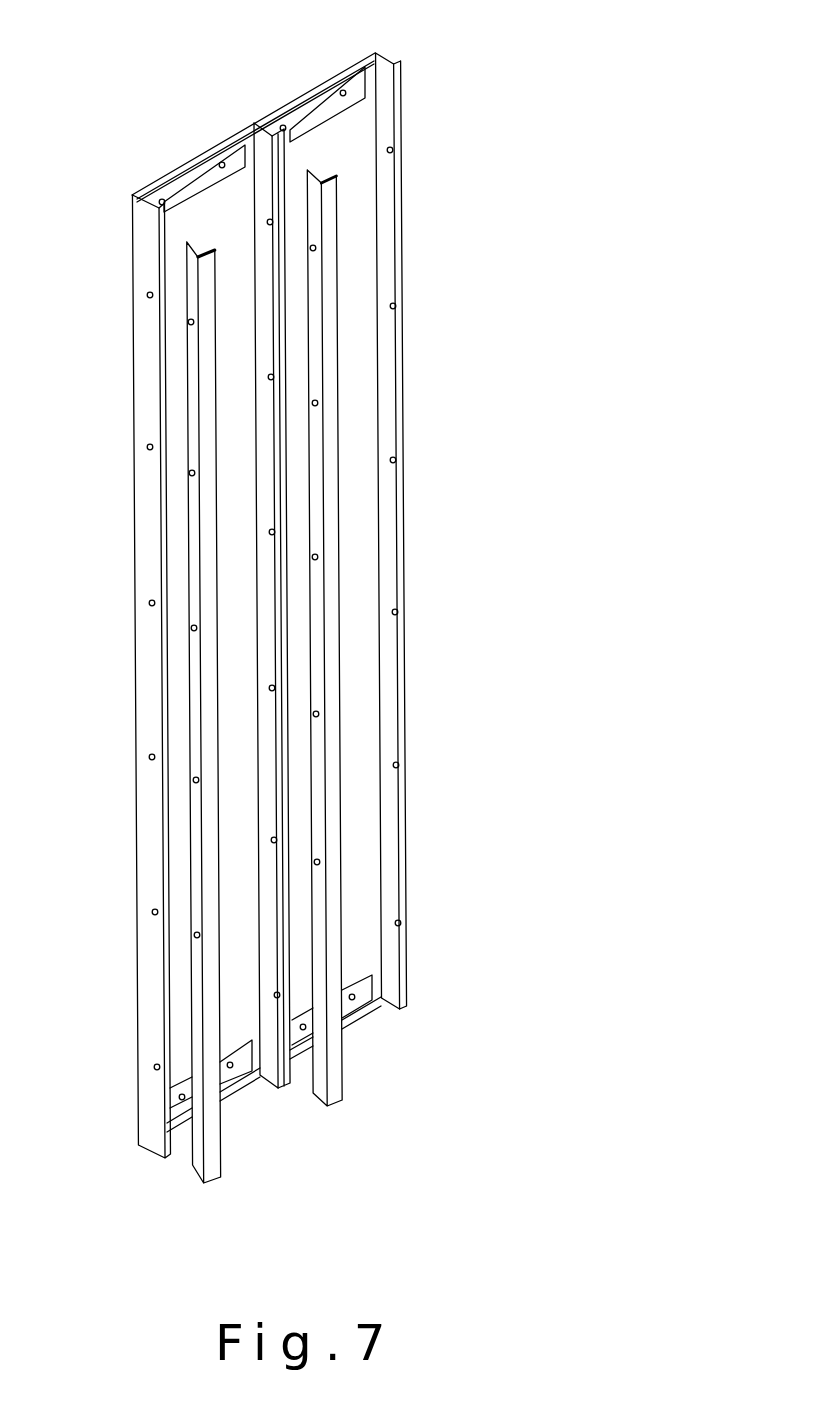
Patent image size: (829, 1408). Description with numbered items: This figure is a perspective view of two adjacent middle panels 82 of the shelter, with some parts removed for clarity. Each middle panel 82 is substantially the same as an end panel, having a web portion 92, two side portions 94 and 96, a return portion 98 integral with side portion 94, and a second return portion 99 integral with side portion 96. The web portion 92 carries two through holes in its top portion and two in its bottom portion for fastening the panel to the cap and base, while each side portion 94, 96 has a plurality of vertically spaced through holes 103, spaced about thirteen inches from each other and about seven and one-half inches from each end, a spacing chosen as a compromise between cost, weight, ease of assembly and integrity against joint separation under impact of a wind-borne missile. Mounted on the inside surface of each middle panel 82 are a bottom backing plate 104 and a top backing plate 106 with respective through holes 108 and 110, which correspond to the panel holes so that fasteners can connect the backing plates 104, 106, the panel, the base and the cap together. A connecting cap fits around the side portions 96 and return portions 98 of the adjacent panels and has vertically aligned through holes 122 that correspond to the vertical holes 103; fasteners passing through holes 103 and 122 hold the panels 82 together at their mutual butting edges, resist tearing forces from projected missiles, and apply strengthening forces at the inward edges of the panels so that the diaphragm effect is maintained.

The middle panel 82 is at (362, 52).
The web portion 92 is at (357, 175).
The side portion 94 is at (263, 150).
The side portion 96 is at (143, 230).
The return portion 98 is at (390, 72).
The second return portion 99 is at (157, 207).
The through holes 103 is at (150, 296).
The bottom backing plate 104 is at (185, 1127).
The top backing plate 106 is at (165, 204).
The through holes 108 is at (352, 1000).
The through holes 110 is at (343, 93).
The through holes 122 is at (191, 323).